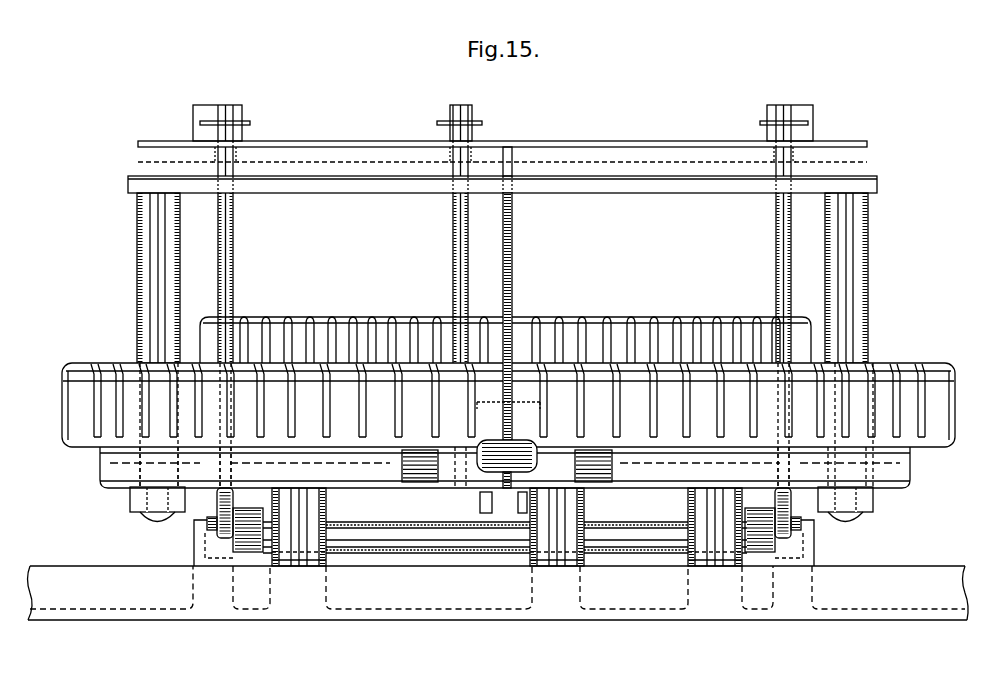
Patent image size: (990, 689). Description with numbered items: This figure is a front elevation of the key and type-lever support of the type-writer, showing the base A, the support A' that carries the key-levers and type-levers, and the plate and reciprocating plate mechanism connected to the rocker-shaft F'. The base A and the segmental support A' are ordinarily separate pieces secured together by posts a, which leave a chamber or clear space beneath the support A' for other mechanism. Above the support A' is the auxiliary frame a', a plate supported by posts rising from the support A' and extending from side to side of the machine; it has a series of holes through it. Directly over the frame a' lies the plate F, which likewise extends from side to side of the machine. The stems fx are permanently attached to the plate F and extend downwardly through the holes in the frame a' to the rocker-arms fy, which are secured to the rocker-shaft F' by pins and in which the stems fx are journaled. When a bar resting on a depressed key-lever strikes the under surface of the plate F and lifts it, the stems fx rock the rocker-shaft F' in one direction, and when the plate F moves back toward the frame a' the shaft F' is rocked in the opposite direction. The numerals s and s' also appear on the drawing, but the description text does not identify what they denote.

The plate F is at (502, 133).
The auxiliary frame a' is at (502, 186).
The stems fx is at (228, 251).
The support A' is at (508, 402).
The screw shaft s is at (508, 317).
The screw foot blocks s' is at (503, 502).
The rocker-shaft F' is at (505, 529).
The posts a is at (507, 527).
The rocker-arms fy is at (504, 527).
The base A is at (498, 593).